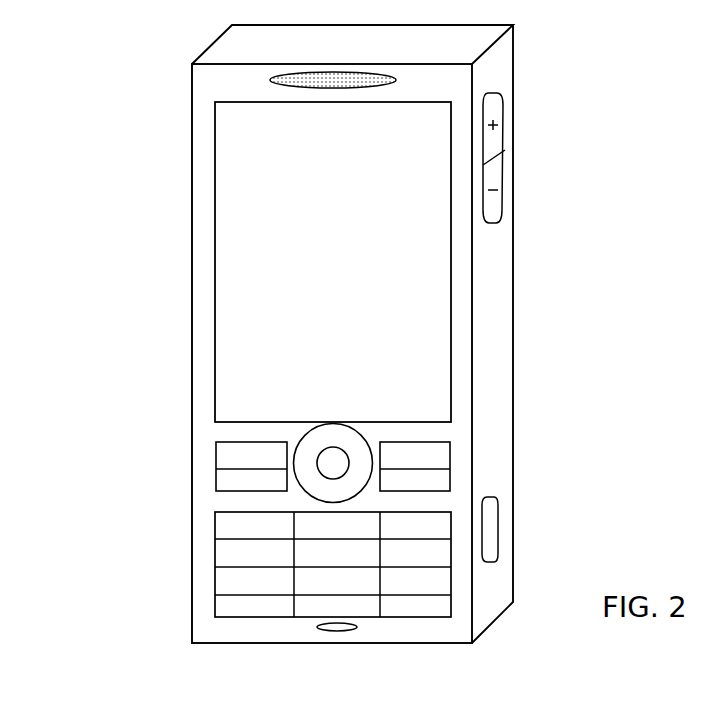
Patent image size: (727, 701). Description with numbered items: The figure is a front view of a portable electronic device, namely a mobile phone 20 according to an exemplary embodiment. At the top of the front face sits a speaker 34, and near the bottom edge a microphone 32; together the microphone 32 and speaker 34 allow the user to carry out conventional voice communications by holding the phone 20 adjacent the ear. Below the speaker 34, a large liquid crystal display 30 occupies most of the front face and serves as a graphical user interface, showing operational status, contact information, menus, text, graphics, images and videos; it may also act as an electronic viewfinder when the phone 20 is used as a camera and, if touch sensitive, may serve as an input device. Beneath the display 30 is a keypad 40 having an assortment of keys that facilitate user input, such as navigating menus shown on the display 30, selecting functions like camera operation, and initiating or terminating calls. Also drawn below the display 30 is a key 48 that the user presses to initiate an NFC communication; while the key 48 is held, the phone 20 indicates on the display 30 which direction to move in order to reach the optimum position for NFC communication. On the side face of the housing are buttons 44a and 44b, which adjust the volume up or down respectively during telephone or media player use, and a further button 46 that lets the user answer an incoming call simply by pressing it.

The mobile phone 20 is at (146, 175).
The liquid crystal display 30 is at (215, 262).
The microphone 32 is at (333, 630).
The speaker 34 is at (318, 79).
The keypad 40 is at (212, 569).
The button 44a is at (502, 112).
The button 44b is at (502, 173).
The button 46 is at (497, 517).
The key 48 is at (440, 453).